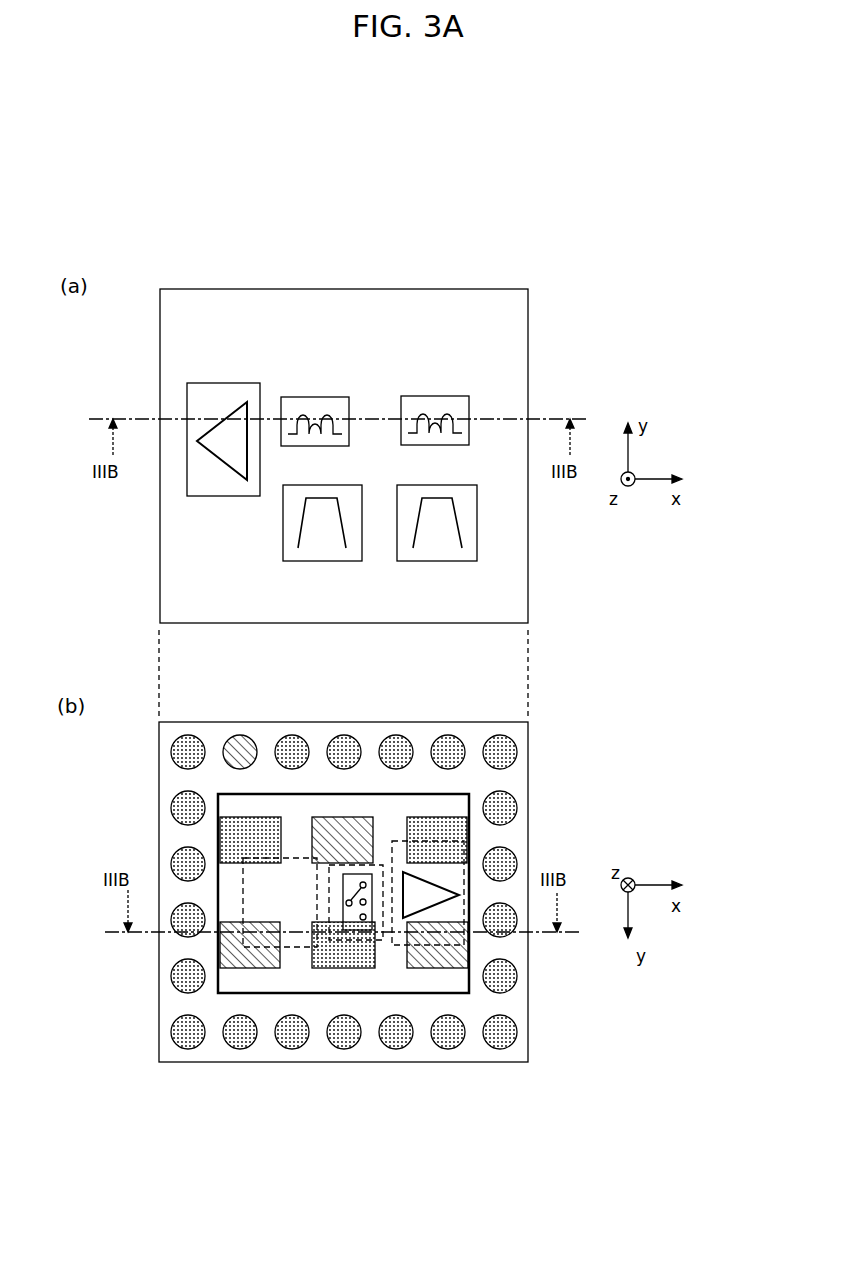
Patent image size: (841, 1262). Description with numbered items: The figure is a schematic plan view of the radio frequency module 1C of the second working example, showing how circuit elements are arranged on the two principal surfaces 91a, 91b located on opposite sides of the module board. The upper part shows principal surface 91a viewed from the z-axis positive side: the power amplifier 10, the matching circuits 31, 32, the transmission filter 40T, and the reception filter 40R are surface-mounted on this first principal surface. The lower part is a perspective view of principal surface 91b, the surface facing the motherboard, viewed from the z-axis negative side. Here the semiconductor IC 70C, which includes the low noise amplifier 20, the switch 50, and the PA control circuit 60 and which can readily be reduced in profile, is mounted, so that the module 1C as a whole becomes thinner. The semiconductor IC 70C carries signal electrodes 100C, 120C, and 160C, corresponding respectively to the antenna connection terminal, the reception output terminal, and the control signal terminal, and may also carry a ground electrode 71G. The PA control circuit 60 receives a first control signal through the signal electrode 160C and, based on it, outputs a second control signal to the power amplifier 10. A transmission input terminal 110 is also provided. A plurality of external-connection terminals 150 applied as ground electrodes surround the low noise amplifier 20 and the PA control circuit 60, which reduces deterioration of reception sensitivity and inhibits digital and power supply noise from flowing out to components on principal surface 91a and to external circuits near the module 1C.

The radio frequency module 1C is at (620, 308).
The principal surface 91a is at (515, 325).
The principal surface 91b is at (515, 770).
The power amplifier 10 is at (222, 382).
The matching circuit 31 is at (310, 396).
The matching circuit 32 is at (433, 394).
The transmission filter 40T is at (313, 561).
The reception filter 40R is at (433, 561).
The low noise amplifier 20 is at (402, 948).
The switch 50 is at (378, 862).
The PA control circuit 60 is at (302, 948).
The semiconductor IC 70C is at (377, 993).
The ground electrode 71G is at (258, 818).
The signal electrode 100C is at (358, 818).
The transmission input terminal 110 is at (244, 745).
The signal electrode 120C is at (447, 960).
The external-connection terminals 150 is at (185, 762).
The signal electrode 160C is at (258, 968).